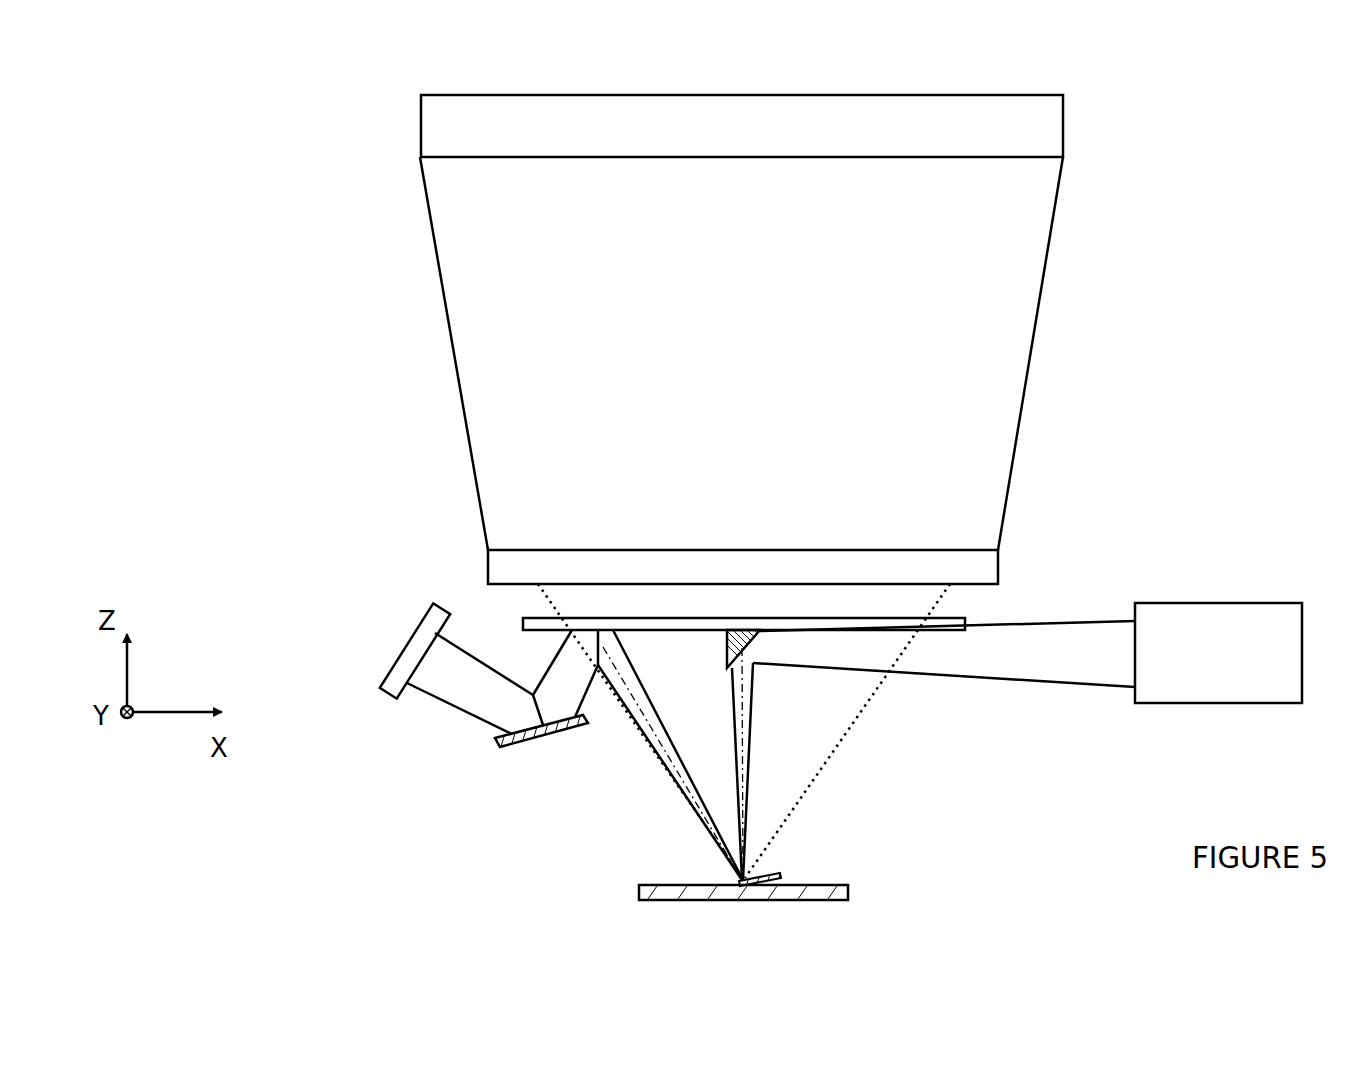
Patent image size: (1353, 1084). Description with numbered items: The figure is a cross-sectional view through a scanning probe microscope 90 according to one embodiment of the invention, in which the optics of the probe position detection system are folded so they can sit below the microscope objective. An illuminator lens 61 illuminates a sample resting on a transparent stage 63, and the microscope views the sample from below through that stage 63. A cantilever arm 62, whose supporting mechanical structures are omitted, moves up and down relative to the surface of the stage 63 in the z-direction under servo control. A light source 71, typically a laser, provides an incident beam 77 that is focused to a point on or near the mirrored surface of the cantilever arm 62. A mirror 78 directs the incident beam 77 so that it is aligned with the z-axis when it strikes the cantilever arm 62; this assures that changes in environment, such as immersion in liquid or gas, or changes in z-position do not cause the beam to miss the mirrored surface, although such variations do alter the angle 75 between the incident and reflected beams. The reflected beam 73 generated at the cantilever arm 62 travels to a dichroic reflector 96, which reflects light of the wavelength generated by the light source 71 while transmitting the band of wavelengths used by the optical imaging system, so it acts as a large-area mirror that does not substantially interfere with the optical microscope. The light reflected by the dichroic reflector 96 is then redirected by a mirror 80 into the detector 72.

The scanning probe microscope 90 is at (136, 250).
The illuminator lens 61 is at (980, 497).
The dichroic reflector 96 is at (958, 613).
The light source 71 is at (1219, 608).
The incident beam 77 is at (1016, 672).
The mirror 78 is at (728, 648).
The angle 75 is at (743, 772).
The reflected beam 73 is at (679, 770).
The detector 72 is at (427, 618).
The mirror 80 is at (512, 740).
The cantilever arm 62 is at (773, 877).
The stage 63 is at (835, 892).